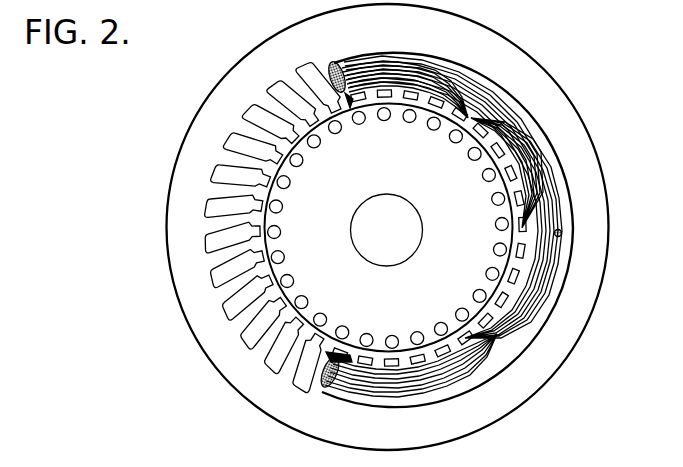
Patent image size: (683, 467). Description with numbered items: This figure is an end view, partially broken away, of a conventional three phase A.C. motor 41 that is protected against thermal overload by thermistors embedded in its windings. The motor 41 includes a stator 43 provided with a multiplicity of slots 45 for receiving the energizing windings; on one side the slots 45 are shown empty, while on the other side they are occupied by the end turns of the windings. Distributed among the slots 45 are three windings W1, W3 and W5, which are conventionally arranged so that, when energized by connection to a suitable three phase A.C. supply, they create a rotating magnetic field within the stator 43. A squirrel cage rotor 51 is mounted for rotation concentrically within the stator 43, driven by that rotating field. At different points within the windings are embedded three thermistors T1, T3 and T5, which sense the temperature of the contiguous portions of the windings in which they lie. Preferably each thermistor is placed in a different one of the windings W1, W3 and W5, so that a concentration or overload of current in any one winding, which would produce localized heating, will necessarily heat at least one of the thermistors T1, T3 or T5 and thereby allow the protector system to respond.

The three phase A.C. motor 41 is at (609, 110).
The stator 43 is at (203, 110).
The slots 45 is at (242, 157).
The squirrel cage rotor 51 is at (331, 218).
The winding W1 is at (375, 50).
The winding W3 is at (546, 272).
The winding W5 is at (337, 396).
The thermistor T1 is at (333, 62).
The thermistor T3 is at (566, 213).
The thermistor T5 is at (304, 390).